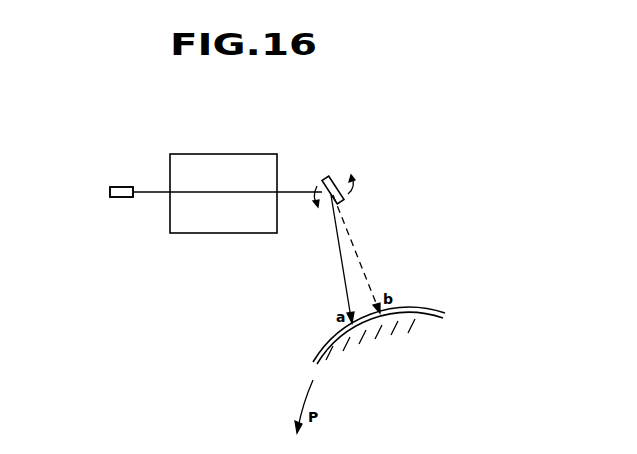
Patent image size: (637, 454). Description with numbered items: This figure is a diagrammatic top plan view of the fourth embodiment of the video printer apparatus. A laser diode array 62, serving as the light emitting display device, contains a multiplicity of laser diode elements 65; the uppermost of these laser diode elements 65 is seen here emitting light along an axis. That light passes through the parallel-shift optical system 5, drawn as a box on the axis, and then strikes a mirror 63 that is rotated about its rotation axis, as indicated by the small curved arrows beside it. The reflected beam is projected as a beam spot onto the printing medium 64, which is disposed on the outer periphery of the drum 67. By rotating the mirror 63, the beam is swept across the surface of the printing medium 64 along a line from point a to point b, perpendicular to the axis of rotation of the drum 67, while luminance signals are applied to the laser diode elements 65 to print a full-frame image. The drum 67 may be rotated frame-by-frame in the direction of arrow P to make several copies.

The parallel-shift optical system 5 is at (203, 234).
The laser diode array 62 is at (119, 184).
The laser diode elements 65 is at (118, 198).
The mirror 63 is at (331, 177).
The printing medium 64 is at (417, 307).
The drum 67 is at (422, 323).